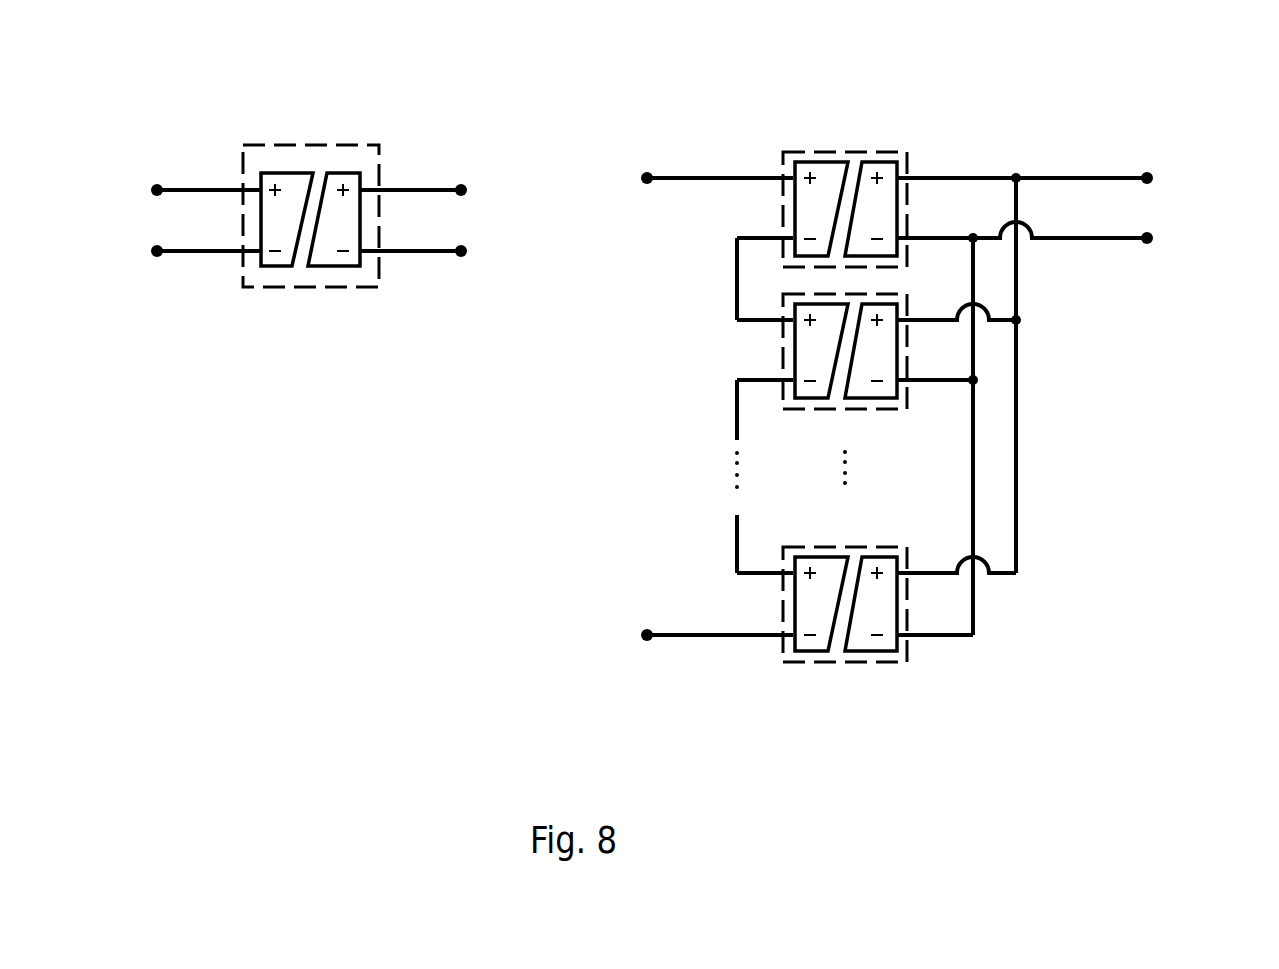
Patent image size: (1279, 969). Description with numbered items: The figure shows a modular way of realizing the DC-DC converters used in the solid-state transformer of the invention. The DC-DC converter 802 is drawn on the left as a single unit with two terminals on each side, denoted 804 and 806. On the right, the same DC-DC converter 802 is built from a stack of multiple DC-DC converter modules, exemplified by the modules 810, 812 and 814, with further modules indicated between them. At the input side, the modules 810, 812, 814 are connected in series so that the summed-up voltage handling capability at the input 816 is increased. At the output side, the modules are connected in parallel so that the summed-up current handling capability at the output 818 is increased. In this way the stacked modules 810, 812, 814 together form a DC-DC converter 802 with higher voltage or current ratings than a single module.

The DC-DC converter 802 is at (275, 140).
The first terminal pair 804 is at (155, 170).
The second terminal pair 806 is at (461, 170).
The DC-DC converter module 810 is at (768, 207).
The DC-DC converter module 812 is at (770, 348).
The DC-DC converter module 814 is at (770, 601).
The input 816 is at (640, 156).
The output 818 is at (1151, 205).